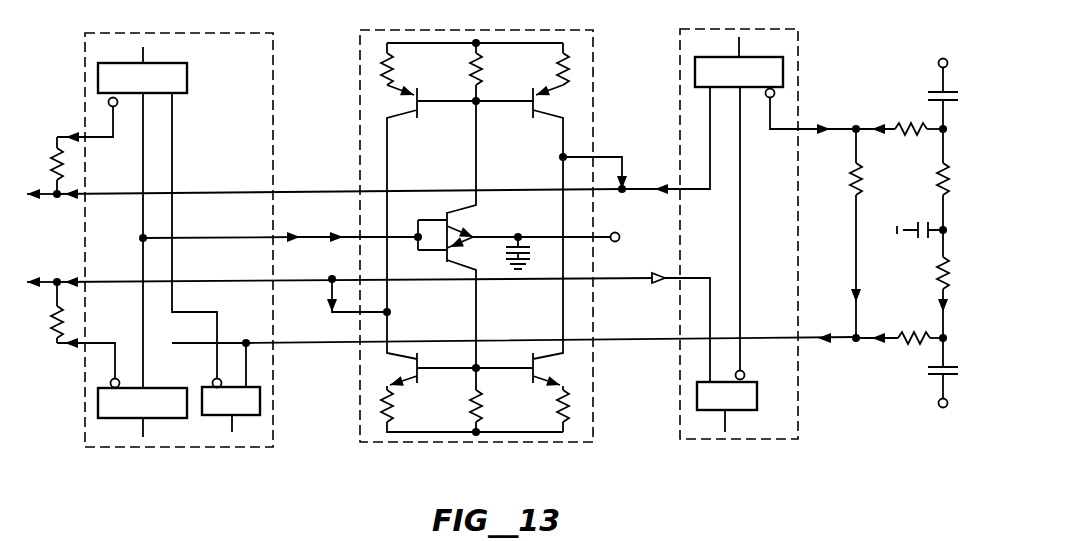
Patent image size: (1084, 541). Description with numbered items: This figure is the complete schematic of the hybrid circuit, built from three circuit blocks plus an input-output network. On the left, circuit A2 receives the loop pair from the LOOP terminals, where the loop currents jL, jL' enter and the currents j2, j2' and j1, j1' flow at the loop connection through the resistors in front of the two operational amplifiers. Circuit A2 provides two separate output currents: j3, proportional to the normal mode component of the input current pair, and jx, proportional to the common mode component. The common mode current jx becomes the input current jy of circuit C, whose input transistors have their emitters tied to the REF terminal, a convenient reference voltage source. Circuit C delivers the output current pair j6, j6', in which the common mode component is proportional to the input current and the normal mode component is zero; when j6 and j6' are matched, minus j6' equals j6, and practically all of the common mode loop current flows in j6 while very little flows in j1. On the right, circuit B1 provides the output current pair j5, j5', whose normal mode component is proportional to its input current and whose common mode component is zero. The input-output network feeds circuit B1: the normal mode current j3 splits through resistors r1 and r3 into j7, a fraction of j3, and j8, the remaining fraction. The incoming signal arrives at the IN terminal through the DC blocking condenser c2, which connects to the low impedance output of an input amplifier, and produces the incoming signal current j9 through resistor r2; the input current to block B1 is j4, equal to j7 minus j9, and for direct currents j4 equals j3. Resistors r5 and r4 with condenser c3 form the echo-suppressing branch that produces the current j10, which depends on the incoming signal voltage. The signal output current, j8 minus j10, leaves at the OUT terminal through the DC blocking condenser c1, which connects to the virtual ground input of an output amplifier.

The circuit block A2 is at (179, 255).
The circuit C is at (476, 253).
The circuit block B1 is at (739, 251).
The current j1 is at (85, 125).
The current j2 is at (337, 205).
The loop current jL is at (42, 205).
The loop terminal LOOP is at (49, 244).
The loop current jL' is at (42, 272).
The current j2' is at (355, 272).
The current j1' is at (88, 363).
The current jx is at (222, 227).
The current jy is at (359, 227).
The reference voltage terminal REF is at (563, 237).
The output current j6' is at (349, 296).
The output current j6 is at (601, 173).
The output current j5 is at (666, 140).
The output current j5' is at (680, 327).
The current j3 is at (514, 349).
The input current j4 is at (813, 116).
The resistor r1 is at (844, 233).
The current j7 is at (848, 294).
The incoming signal current j9 is at (875, 118).
The resistor r2 is at (919, 119).
The input terminal IN is at (942, 53).
The condenser C2 c2 is at (934, 101).
The resistor r5 is at (932, 181).
The condenser C3 c3 is at (920, 244).
The resistor r4 is at (935, 286).
The current j10 is at (932, 306).
The current j8 is at (877, 349).
The resistor r3 is at (920, 349).
The condenser C1 c1 is at (935, 368).
The output terminal OUT is at (943, 417).